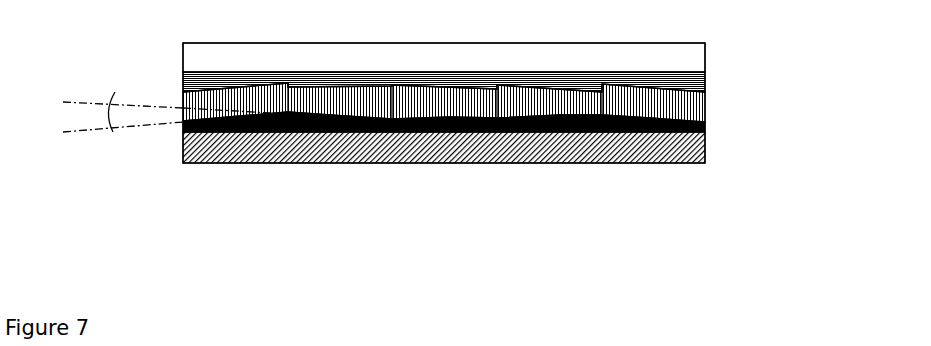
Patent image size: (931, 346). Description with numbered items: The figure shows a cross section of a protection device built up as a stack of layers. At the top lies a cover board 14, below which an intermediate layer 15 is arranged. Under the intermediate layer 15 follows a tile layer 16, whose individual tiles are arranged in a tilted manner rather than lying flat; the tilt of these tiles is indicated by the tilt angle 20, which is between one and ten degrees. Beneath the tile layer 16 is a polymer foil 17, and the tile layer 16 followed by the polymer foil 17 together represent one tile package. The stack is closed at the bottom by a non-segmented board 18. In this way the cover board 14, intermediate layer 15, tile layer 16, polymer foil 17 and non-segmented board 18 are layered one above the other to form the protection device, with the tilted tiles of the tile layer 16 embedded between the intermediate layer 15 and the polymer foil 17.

The cover board 14 is at (694, 58).
The intermediate layer 15 is at (694, 78).
The tile layer 16 is at (694, 103).
The polymer foil 17 is at (706, 132).
The non-segmented board 18 is at (694, 150).
The tilt angle 20 is at (137, 116).